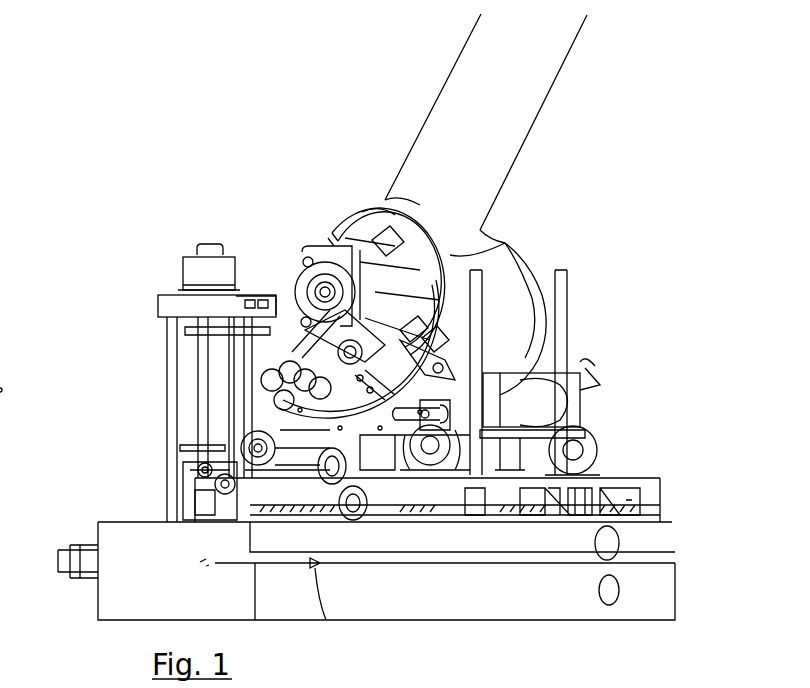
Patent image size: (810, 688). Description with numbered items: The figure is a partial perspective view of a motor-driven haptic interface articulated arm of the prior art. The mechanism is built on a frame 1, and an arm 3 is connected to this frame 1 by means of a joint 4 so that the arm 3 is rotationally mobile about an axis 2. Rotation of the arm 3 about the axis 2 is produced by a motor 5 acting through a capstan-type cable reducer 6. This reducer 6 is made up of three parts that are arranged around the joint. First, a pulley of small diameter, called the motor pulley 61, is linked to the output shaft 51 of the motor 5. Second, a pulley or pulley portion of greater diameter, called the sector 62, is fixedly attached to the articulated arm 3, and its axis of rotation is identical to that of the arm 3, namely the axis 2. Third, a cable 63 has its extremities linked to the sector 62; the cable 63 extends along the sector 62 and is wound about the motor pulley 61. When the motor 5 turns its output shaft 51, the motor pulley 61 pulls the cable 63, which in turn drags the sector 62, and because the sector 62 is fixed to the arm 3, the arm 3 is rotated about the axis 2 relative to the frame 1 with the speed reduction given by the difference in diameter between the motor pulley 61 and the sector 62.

The frame 1 is at (553, 550).
The output shaft 51 is at (412, 470).
The axis 2 is at (298, 290).
The arm 3 is at (518, 73).
The joint 4 is at (525, 240).
The motor 5 is at (525, 395).
The capstan-type cable reducer 6 is at (470, 345).
The motor pulley 61 is at (415, 412).
The sector 62 is at (452, 338).
The cable 63 is at (455, 378).